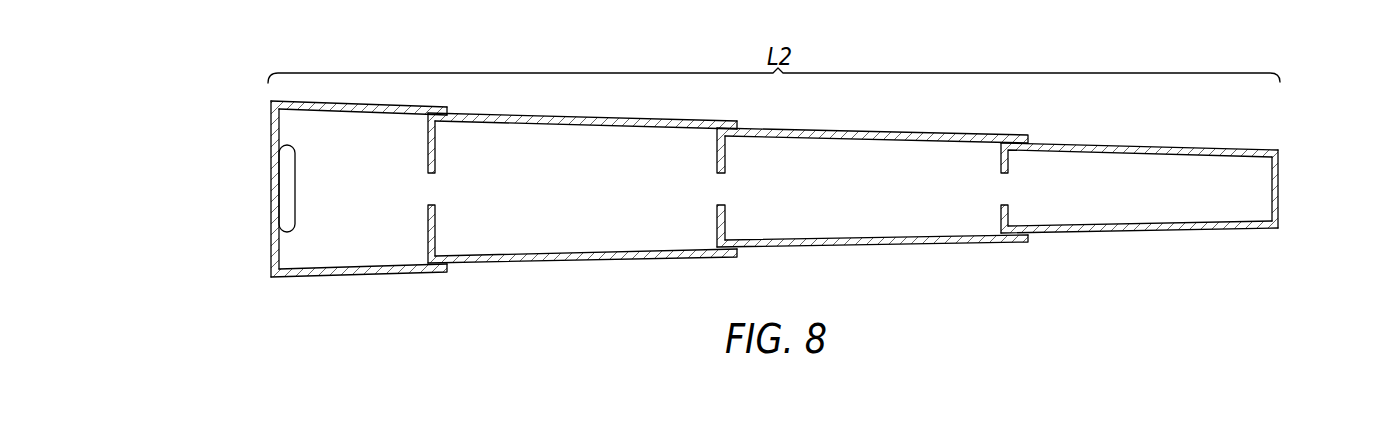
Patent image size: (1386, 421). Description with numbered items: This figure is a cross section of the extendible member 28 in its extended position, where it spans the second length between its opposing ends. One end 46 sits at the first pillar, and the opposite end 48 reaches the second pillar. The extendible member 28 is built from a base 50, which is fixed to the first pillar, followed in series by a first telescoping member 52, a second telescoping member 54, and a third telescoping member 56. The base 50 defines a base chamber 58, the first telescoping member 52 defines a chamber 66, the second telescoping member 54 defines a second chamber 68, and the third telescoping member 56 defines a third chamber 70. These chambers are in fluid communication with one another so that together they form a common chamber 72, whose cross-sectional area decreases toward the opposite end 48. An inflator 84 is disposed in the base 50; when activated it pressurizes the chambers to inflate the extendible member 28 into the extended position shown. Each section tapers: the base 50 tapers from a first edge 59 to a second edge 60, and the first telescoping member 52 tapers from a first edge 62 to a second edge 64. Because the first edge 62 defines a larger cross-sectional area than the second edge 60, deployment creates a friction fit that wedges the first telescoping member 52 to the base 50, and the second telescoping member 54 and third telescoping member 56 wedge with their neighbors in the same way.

The extendible member 28 is at (226, 151).
The end 46 is at (271, 277).
The opposite end 48 is at (1279, 228).
The base 50 is at (355, 276).
The first telescoping member 52 is at (548, 261).
The second telescoping member 54 is at (885, 246).
The third telescoping member 56 is at (1168, 233).
The base chamber 58 is at (364, 203).
The first edge 59 is at (271, 101).
The second edge 60 is at (447, 109).
The first edge 62 is at (427, 117).
The second edge 64 is at (737, 123).
The chamber 66 is at (573, 206).
The second chamber 68 is at (858, 204).
The third chamber 70 is at (1144, 203).
The common chamber 72 is at (382, 238).
The inflator 84 is at (286, 207).